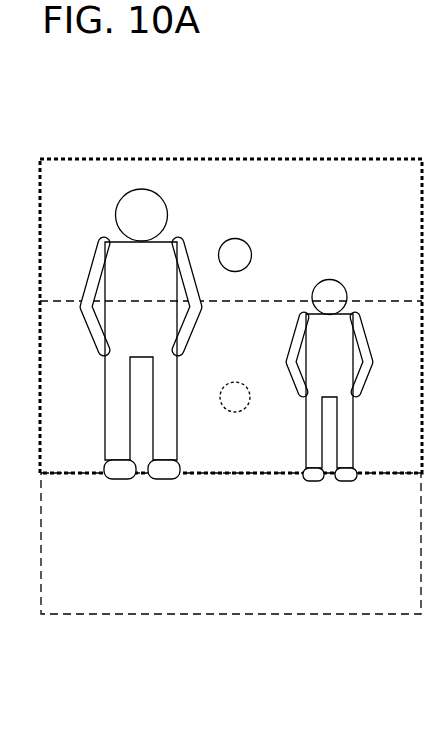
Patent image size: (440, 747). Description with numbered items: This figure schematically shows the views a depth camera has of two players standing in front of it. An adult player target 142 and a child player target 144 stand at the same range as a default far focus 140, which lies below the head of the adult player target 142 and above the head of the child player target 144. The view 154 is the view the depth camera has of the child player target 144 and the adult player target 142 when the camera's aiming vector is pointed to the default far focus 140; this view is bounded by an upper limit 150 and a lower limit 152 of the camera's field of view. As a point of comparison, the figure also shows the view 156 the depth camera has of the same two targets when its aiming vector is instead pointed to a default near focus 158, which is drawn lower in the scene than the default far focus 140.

The default far focus 140 is at (251, 251).
The adult player target 142 is at (162, 278).
The child player target 144 is at (348, 358).
The upper limit 150 is at (67, 159).
The lower limit 152 is at (58, 475).
The view 154 is at (186, 139).
The view 156 is at (398, 288).
The default near focus 158 is at (250, 376).